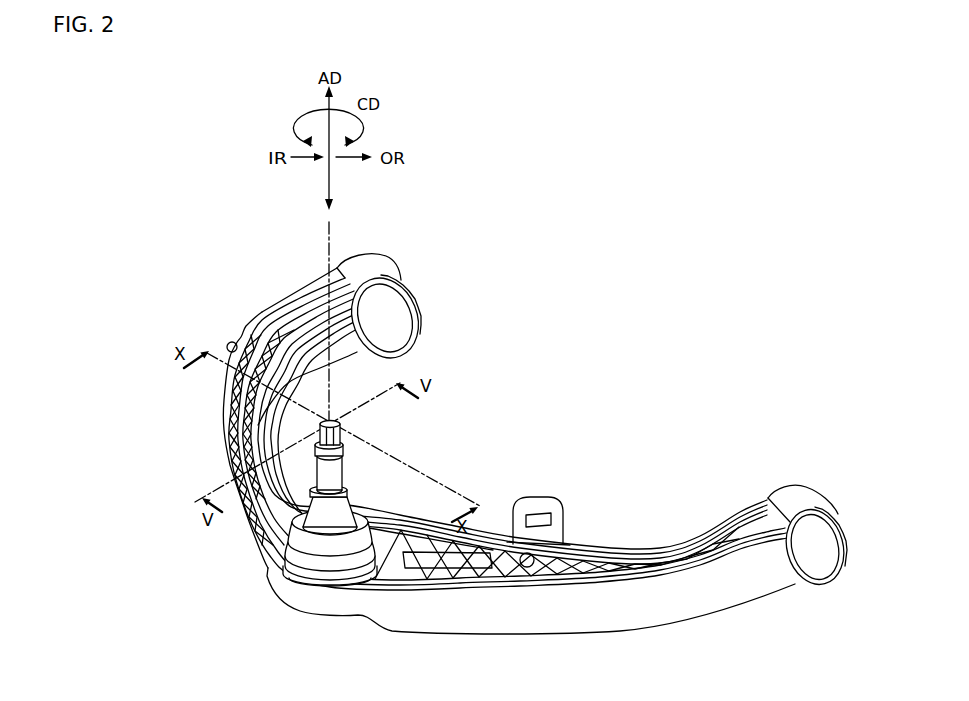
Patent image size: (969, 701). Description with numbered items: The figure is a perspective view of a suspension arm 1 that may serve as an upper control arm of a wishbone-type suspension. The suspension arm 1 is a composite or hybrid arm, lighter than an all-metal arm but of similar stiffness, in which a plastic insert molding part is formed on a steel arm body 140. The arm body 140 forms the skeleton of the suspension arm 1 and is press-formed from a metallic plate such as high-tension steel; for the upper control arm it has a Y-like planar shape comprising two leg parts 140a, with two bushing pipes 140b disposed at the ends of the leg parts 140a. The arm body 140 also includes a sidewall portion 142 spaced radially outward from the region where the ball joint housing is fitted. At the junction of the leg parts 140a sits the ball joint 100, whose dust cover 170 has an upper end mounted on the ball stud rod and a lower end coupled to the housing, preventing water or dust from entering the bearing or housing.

The suspension arm 1 is at (570, 341).
The ball joint 100 is at (374, 504).
The arm body 140 is at (628, 532).
The leg parts 140a is at (306, 363).
The bushing pipes 140b is at (368, 268).
The sidewall portion 142 is at (690, 582).
The dust cover 170 is at (366, 530).